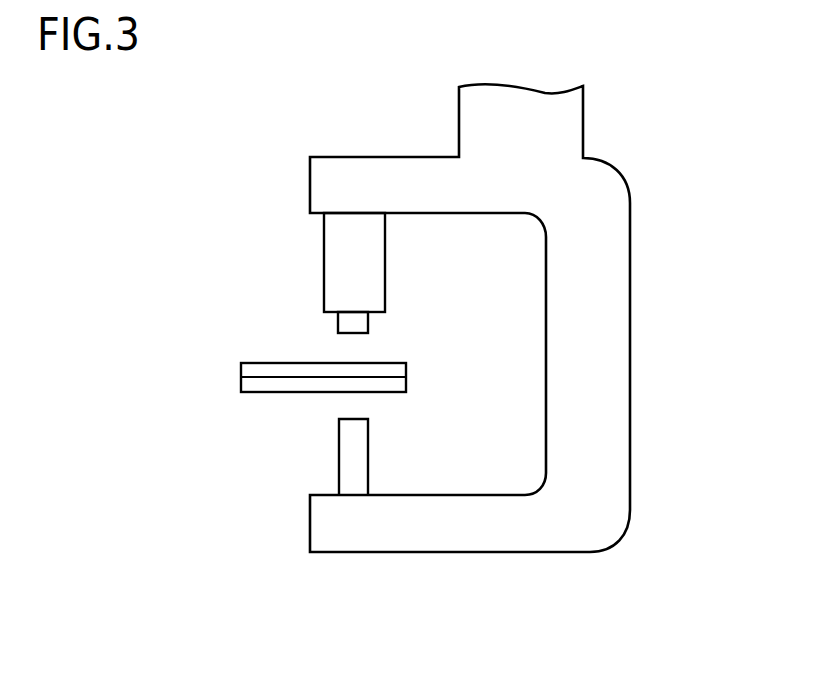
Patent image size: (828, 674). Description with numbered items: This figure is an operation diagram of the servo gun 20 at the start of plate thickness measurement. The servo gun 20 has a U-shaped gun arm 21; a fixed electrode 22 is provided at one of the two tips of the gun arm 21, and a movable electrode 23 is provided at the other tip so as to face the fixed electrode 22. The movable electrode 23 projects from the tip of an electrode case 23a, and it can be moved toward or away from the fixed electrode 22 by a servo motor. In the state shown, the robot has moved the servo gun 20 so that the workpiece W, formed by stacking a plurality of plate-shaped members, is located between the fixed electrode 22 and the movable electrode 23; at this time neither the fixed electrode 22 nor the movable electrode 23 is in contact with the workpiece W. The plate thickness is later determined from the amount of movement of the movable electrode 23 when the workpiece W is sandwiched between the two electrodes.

The servo gun 20 is at (218, 147).
The gun arm 21 is at (612, 370).
The fixed electrode 22 is at (347, 444).
The movable electrode 23 is at (347, 323).
The electrode case 23a is at (340, 265).
The workpiece W is at (420, 362).